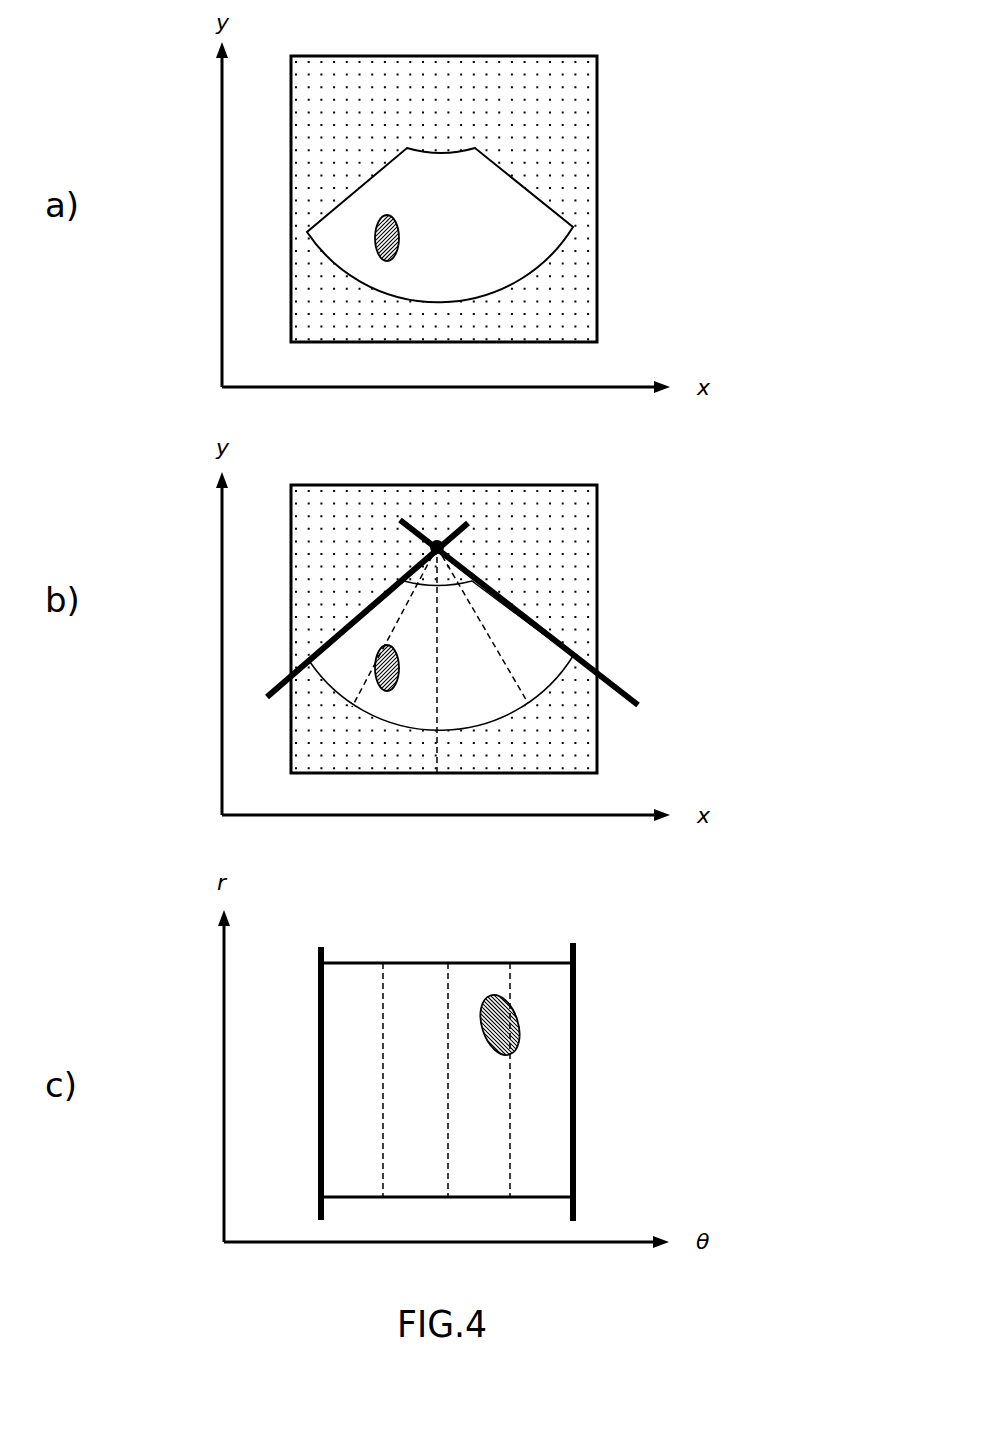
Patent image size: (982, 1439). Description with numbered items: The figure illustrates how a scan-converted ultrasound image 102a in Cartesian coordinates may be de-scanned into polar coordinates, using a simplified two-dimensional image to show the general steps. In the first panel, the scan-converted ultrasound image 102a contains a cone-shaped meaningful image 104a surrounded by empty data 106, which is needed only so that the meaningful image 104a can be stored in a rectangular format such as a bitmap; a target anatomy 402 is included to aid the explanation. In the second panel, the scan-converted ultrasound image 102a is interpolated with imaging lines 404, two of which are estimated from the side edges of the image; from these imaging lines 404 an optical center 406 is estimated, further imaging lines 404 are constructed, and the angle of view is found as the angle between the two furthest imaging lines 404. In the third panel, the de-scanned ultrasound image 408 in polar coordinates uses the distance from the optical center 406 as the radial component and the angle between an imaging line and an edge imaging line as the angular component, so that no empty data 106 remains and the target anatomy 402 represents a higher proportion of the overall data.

The scan-converted ultrasound image 102a is at (587, 55).
The meaningful image 104a is at (533, 190).
The empty data 106 is at (575, 97).
The target anatomy 402 is at (375, 250).
The imaging lines 404 is at (286, 680).
The optical center 406 is at (445, 551).
The de-scanned ultrasound image 408 is at (408, 962).